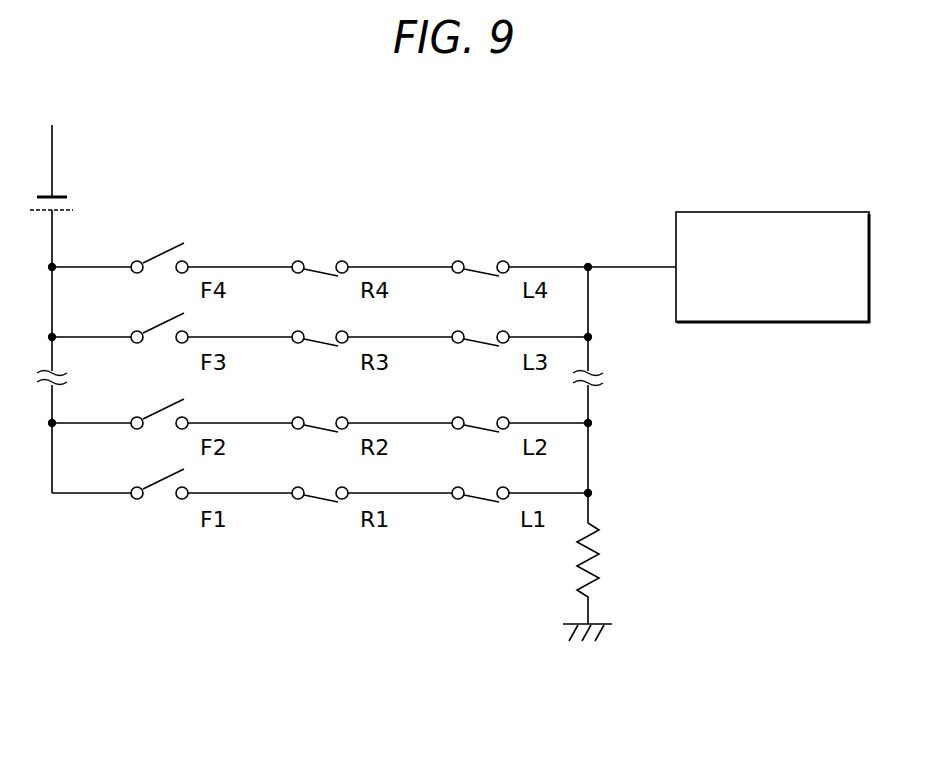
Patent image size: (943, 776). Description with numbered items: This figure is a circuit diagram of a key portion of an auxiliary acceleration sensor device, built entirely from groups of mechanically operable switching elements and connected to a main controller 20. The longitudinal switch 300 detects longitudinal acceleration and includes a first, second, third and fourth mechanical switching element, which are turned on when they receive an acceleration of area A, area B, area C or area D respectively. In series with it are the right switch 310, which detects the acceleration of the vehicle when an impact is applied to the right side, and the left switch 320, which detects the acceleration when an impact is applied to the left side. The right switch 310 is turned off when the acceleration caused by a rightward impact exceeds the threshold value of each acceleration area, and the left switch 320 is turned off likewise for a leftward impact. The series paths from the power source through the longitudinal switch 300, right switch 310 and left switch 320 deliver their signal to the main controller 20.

The main controller 20 is at (768, 212).
The longitudinal switch 300 is at (136, 518).
The right switch 310 is at (296, 518).
The left switch 320 is at (458, 518).